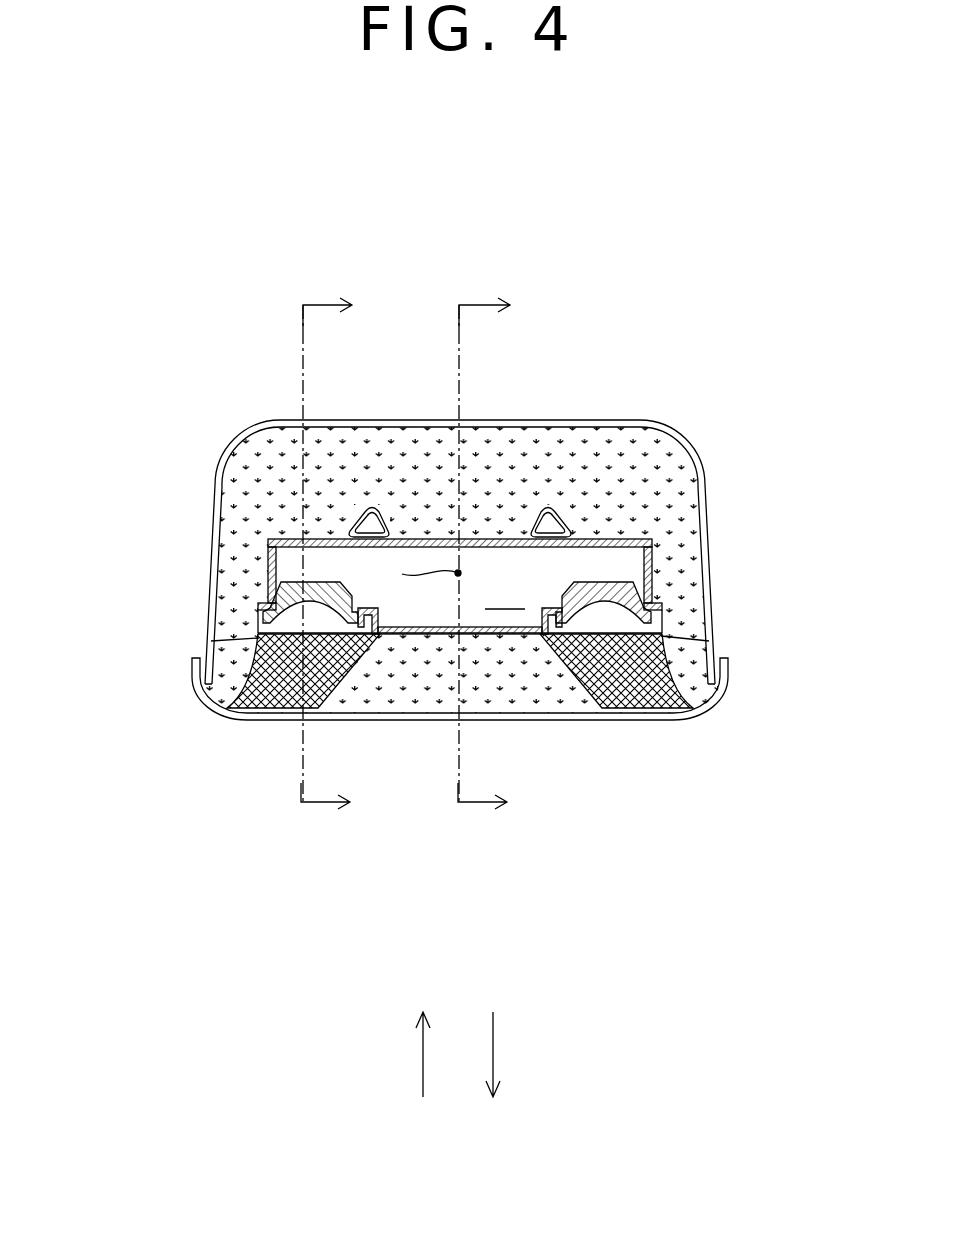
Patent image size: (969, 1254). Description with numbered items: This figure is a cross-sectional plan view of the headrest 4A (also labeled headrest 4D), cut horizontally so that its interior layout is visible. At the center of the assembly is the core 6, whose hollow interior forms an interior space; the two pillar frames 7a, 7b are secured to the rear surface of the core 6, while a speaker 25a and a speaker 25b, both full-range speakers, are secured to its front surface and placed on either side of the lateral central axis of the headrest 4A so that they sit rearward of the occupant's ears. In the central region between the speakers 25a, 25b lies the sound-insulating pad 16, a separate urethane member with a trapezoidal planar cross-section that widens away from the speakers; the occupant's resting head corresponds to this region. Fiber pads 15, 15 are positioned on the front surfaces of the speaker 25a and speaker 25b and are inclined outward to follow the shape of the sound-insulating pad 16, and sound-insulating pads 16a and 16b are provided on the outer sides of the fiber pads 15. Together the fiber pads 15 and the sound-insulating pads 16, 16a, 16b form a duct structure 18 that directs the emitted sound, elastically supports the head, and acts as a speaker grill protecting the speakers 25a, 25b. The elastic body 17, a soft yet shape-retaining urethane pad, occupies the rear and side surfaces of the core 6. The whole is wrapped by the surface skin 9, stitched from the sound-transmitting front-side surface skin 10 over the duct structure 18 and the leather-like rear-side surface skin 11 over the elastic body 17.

The headrest 4A is at (575, 284).
The headrest 4D is at (422, 685).
The core 6 is at (490, 539).
The pillar frame 7a is at (372, 507).
The pillar frame 7b is at (548, 507).
The surface skin 9 is at (88, 513).
The front-side surface skin 10 is at (197, 698).
The rear-side surface skin 11 is at (215, 530).
The fiber pad 15 is at (265, 690).
The sound-insulating pad 16 is at (438, 690).
The sound-insulating pad 16a is at (718, 690).
The sound-insulating pad 16b is at (213, 690).
The elastic body 17 is at (658, 458).
The duct structure 18 is at (145, 893).
The speaker 25a is at (610, 587).
The speaker 25b is at (323, 590).